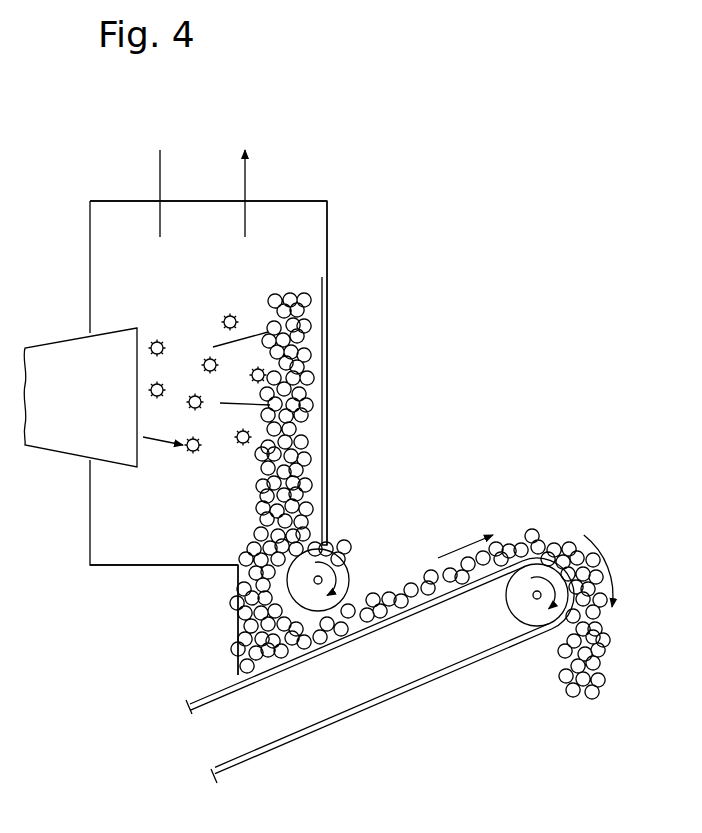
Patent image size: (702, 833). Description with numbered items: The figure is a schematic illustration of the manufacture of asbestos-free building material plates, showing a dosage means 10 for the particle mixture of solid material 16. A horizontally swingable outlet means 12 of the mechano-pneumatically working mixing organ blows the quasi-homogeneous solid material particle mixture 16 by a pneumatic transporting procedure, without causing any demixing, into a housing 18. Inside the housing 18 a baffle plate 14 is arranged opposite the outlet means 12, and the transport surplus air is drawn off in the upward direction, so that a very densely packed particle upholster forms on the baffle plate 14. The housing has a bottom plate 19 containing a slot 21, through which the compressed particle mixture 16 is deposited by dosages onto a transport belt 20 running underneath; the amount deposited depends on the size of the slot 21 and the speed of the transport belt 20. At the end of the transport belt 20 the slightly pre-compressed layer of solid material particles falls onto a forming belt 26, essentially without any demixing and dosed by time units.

The dosage means 10 is at (327, 242).
The outlet means 12 is at (56, 340).
The baffle plate 14 is at (327, 342).
The solid material particle mixture 16 is at (322, 428).
The housing 18 is at (288, 201).
The bottom plate 19 is at (127, 565).
The transport belt 20 is at (222, 686).
The slot 21 is at (238, 577).
The forming belt 26 is at (505, 605).